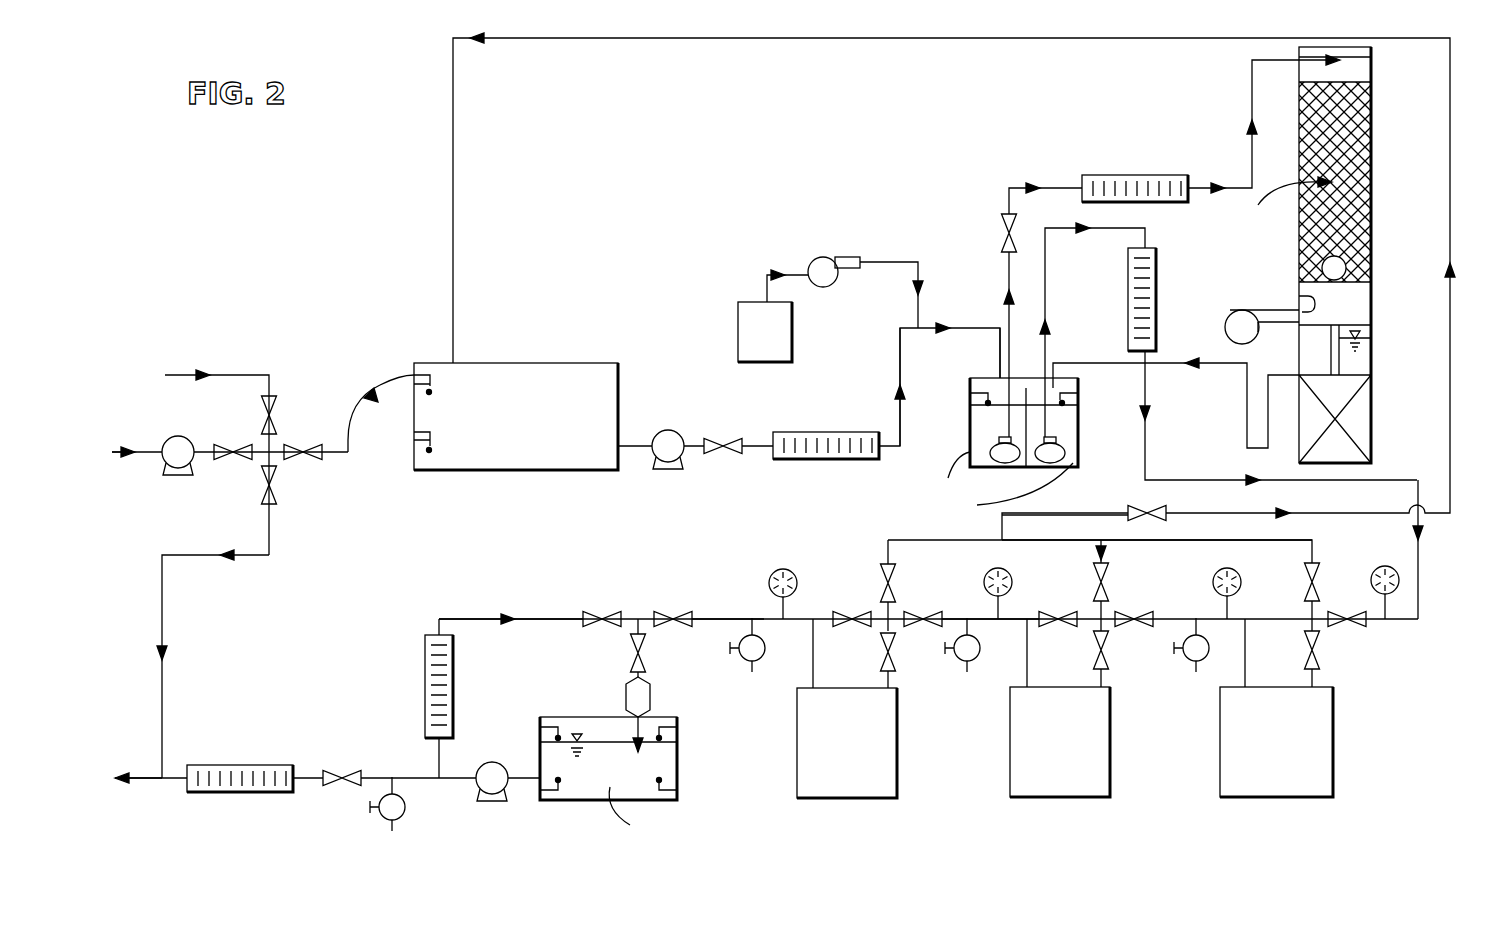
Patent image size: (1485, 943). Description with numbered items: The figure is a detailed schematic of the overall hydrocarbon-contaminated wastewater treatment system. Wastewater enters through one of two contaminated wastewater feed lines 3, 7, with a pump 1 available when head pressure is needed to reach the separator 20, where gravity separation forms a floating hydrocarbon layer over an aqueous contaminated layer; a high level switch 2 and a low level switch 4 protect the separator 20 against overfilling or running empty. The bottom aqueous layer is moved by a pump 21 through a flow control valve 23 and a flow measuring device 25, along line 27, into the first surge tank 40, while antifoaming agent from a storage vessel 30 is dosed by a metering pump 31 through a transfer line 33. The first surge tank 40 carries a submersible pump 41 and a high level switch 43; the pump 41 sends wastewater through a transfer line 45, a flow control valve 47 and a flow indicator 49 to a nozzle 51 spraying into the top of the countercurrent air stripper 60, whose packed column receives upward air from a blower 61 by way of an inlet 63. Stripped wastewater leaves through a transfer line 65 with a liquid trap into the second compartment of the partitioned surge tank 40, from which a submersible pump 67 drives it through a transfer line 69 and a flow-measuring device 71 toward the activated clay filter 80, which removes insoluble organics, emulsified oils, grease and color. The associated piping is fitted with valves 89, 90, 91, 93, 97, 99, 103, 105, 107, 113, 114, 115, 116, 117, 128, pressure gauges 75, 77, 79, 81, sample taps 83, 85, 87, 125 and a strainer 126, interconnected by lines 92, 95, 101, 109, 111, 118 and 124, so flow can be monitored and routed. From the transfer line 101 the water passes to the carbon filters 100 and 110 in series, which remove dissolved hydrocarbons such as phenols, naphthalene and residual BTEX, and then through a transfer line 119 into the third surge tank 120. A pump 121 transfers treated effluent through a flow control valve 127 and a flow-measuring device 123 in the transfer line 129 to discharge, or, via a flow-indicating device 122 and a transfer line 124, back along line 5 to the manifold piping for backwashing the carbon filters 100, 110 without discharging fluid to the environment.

The pump 1 is at (172, 432).
The high level switch 2 is at (428, 380).
The contaminated wastewater feed line 3 is at (238, 372).
The low level switch 4 is at (428, 432).
The bypass line 5 is at (163, 612).
The contaminated wastewater feed line 7 is at (120, 453).
The separator 20 is at (545, 363).
The pump 21 is at (672, 430).
The flow control valve 23 is at (732, 443).
The flow measuring device 25 is at (838, 430).
The line 27 is at (900, 365).
The storage vessel 30 is at (738, 330).
The metering pump 31 is at (815, 258).
The transfer line 33 is at (880, 260).
The surge tank 40 is at (970, 415).
The submersible pump 41 is at (990, 448).
The high level switch 43 is at (983, 380).
The transfer line 45 is at (1005, 312).
The flow control valve 47 is at (1004, 230).
The flow indicator 49 is at (1130, 175).
The nozzle 51 is at (1340, 62).
The countercurrent air stripper 60 is at (1375, 190).
The blower 61 is at (1230, 312).
The air inlet 63 is at (1299, 297).
The transfer line 65 is at (1245, 422).
The submersible pump 67 is at (1063, 448).
The transfer line 69 is at (1045, 245).
The flow-measuring device 71 is at (1128, 297).
The pressure gauge 75 is at (1385, 565).
The pressure gauge 77 is at (1241, 580).
The pressure gauge 79 is at (1008, 572).
The activated clay filter 80 is at (1220, 760).
The pressure gauge 81 is at (783, 568).
The sample port 83 is at (1180, 632).
The sample port 85 is at (970, 663).
The sample port 87 is at (740, 660).
The valve 89 is at (1340, 626).
The valve 90 is at (1162, 512).
The valve 91 is at (1305, 648).
The line 92 is at (1085, 513).
The valve 93 is at (1322, 580).
The line 95 is at (1240, 541).
The valve 97 is at (1112, 580).
The valve 99 is at (882, 578).
The carbon filter 100 is at (1010, 748).
The transfer line 101 is at (1207, 615).
The valve 103 is at (1130, 610).
The valve 105 is at (1108, 660).
The valve 107 is at (1033, 610).
The line 109 is at (1028, 637).
The carbon filter 110 is at (797, 778).
The line 111 is at (990, 617).
The valve 113 is at (913, 600).
The valve 114 is at (632, 652).
The valve 115 is at (860, 610).
The valve 116 is at (665, 608).
The valve 117 is at (896, 660).
The line 118 is at (810, 660).
The transfer line 119 is at (717, 618).
The third surge tank 120 is at (677, 758).
The pump 121 is at (490, 762).
The flow-indicating device 122 is at (425, 678).
The flow-measuring device 123 is at (228, 765).
The transfer line 124 is at (545, 618).
The sample port 125 is at (405, 805).
The strainer 126 is at (626, 697).
The flow control valve 127 is at (340, 770).
The valve 128 is at (594, 608).
The transfer line 129 is at (145, 780).